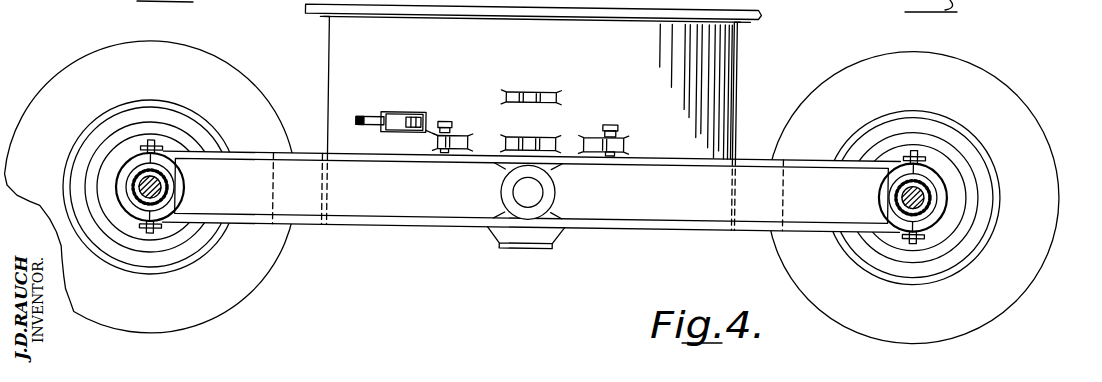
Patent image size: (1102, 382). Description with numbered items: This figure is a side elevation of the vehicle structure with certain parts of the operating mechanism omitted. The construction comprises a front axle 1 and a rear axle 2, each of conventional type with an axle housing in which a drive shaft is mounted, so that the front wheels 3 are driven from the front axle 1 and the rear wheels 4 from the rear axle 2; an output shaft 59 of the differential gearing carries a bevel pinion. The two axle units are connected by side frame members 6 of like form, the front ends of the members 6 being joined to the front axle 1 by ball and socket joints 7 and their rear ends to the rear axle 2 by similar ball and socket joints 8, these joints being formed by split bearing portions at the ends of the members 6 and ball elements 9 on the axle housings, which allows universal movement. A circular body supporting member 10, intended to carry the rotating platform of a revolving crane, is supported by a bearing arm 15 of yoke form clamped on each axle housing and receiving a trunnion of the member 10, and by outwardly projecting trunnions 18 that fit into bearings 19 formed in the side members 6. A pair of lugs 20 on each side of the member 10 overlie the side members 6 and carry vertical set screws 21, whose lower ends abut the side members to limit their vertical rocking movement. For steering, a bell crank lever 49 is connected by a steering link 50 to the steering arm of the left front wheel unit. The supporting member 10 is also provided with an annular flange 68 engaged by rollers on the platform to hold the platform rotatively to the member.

The front axle 1 is at (165, 183).
The rear axle 2 is at (930, 203).
The front wheels 3 is at (262, 91).
The rear wheels 4 is at (820, 84).
The side frame members 6 is at (305, 219).
The ball and socket joints 7 is at (178, 193).
The ball and socket joints 8 is at (893, 195).
The ball elements 9 is at (133, 170).
The body supporting member 10 is at (732, 96).
The bearing arm 15 is at (268, 128).
The trunnions 18 is at (547, 186).
The bearings 19 is at (501, 171).
The lugs 20 is at (458, 137).
The set screws 21 is at (444, 121).
The bell crank lever 49 is at (432, 115).
The steering link 50 is at (368, 113).
The output shaft 59 is at (140, 191).
The annular flange 68 is at (760, 17).